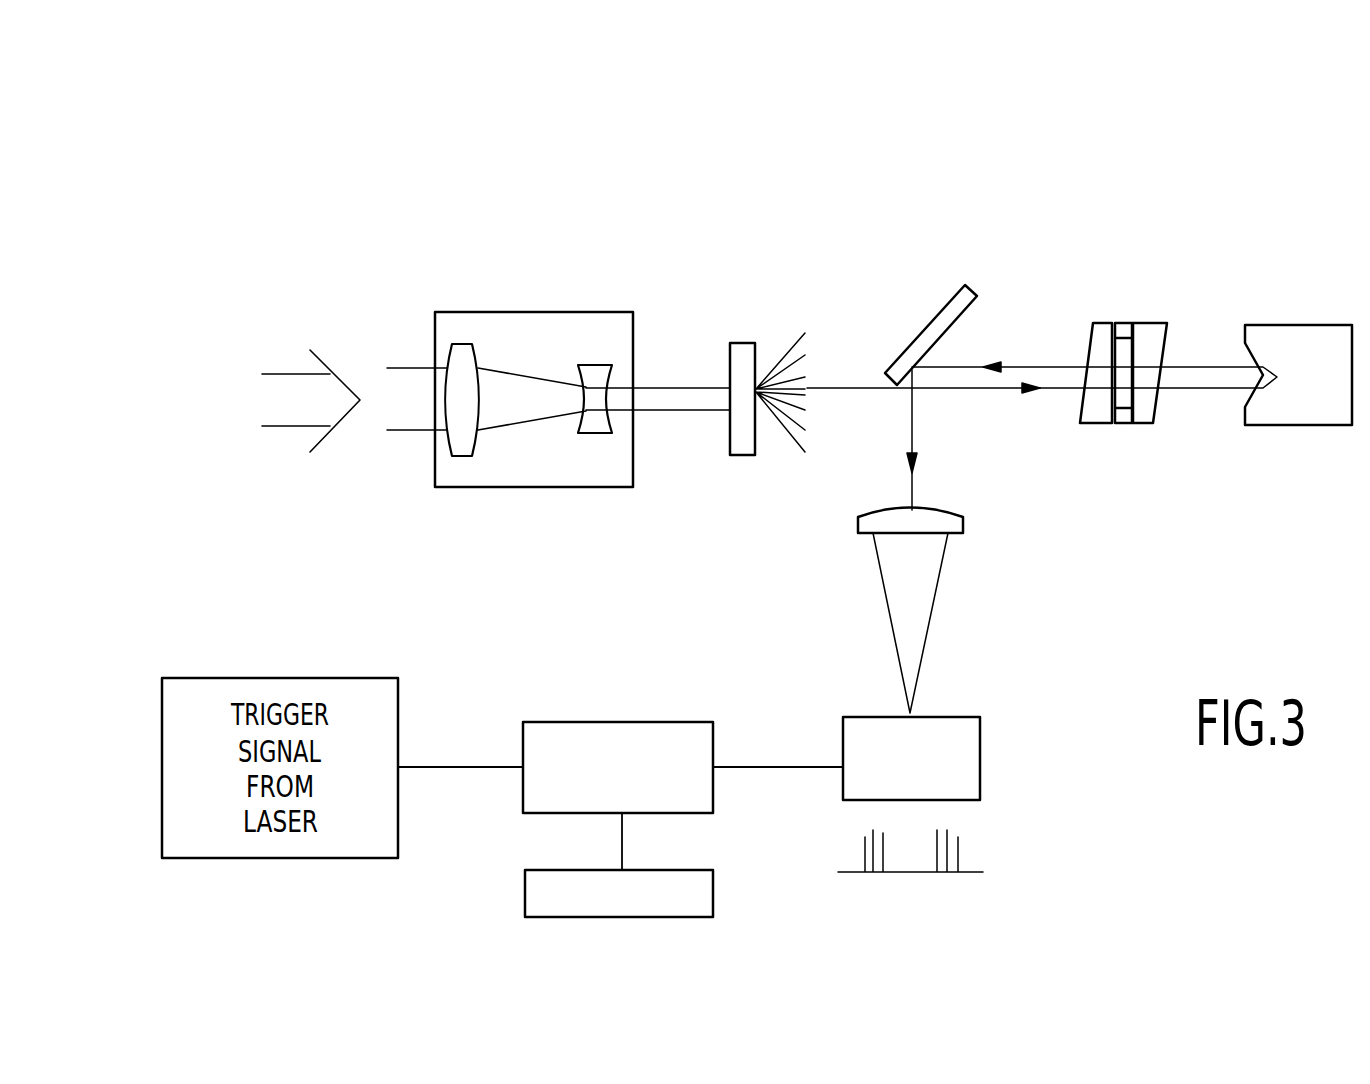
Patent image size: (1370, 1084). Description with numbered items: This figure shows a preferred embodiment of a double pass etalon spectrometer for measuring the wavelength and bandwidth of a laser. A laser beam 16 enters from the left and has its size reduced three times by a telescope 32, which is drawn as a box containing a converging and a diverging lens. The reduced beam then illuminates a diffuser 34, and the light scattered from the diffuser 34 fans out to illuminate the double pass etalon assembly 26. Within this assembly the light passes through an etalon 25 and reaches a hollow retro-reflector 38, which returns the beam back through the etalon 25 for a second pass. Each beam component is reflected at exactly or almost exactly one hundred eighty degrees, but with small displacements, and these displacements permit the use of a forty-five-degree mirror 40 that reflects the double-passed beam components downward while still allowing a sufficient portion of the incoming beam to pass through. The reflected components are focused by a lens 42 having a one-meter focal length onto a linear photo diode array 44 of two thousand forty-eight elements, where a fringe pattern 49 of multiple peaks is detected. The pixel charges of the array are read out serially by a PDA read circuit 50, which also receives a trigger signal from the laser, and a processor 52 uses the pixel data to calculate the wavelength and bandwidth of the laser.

The laser beam 16 is at (287, 360).
The etalon 25 is at (1115, 440).
The double pass etalon assembly 26 is at (1142, 207).
The telescope 32 is at (532, 312).
The diffuser 34 is at (740, 343).
The hollow retro-reflector 38 is at (1297, 325).
The 45-degree mirror 40 is at (925, 328).
The lens 42 is at (963, 522).
The linear photo diode array 44 is at (980, 757).
The fringe pattern 49 is at (978, 837).
The PDA read circuit 50 is at (618, 722).
The processor 52 is at (688, 870).